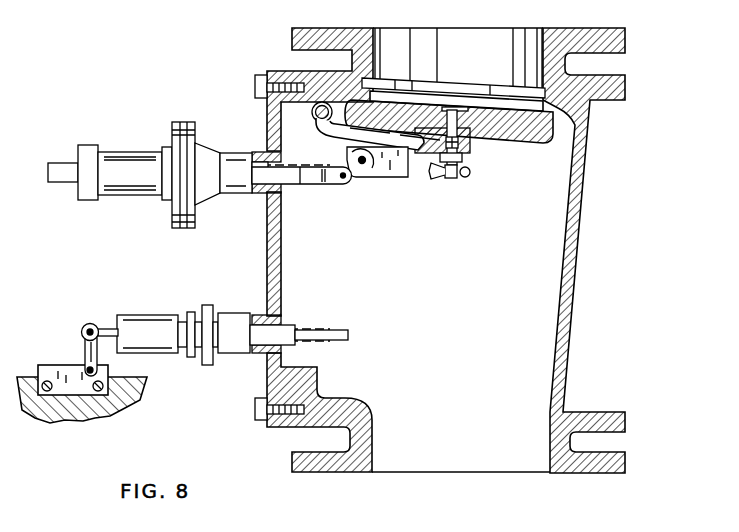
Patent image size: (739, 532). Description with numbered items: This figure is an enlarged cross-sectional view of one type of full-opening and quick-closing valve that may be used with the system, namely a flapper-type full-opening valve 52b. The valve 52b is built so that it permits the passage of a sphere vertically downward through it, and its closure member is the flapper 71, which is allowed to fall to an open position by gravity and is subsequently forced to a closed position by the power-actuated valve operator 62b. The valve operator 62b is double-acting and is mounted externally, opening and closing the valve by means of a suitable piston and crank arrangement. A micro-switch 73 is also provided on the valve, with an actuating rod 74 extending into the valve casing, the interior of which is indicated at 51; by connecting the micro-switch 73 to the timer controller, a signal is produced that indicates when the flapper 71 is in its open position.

The chamber 51 is at (442, 272).
The full-opening valve 52b is at (579, 256).
The valve operator 62b is at (151, 153).
The flapper 71 is at (507, 138).
The micro-switch 73 is at (63, 365).
The actuating rod 74 is at (338, 342).